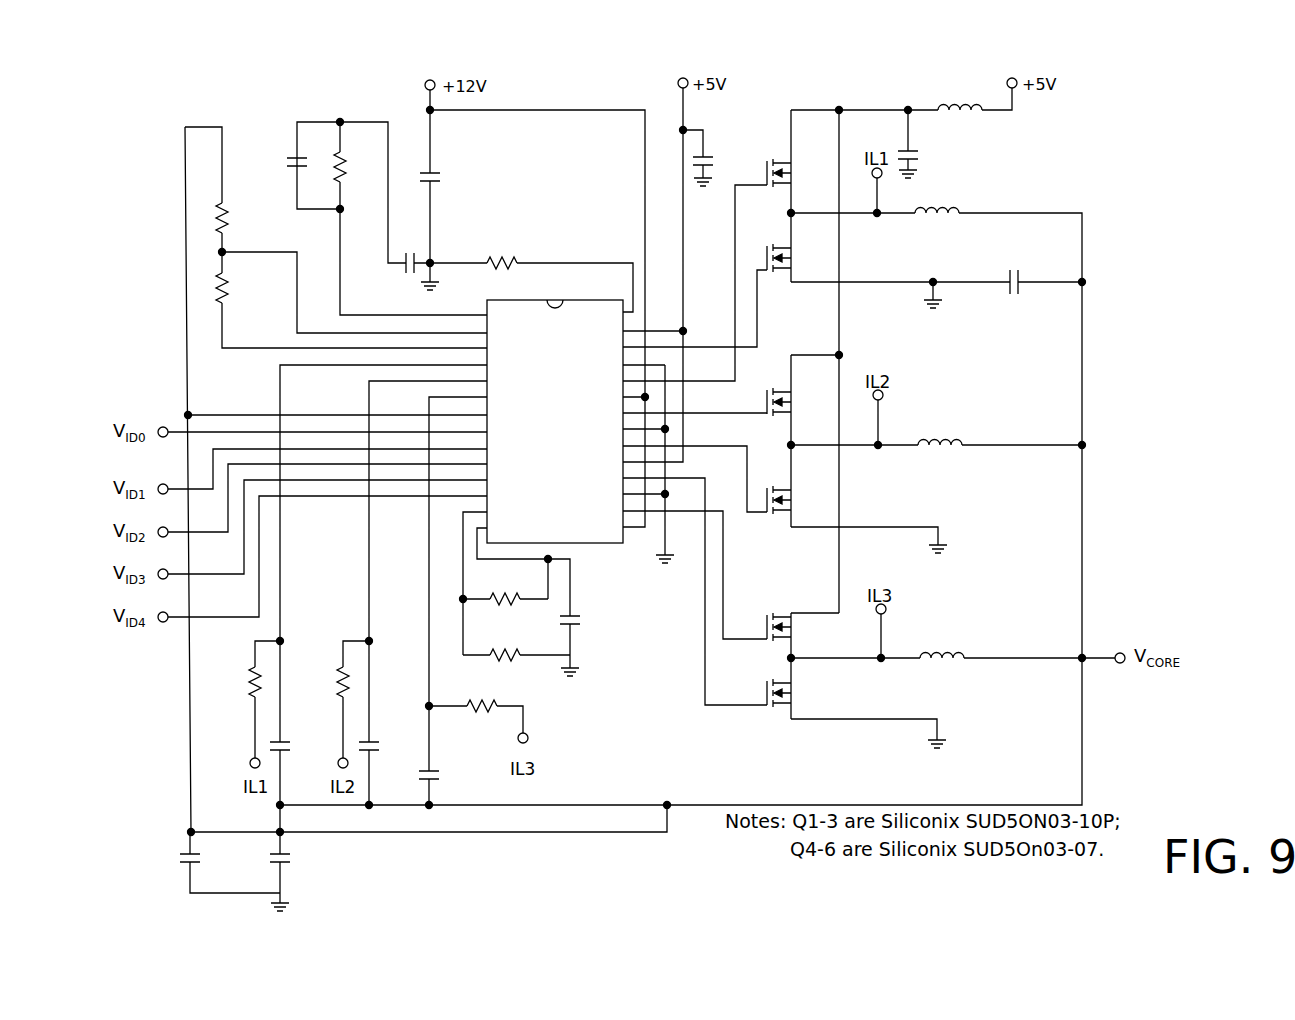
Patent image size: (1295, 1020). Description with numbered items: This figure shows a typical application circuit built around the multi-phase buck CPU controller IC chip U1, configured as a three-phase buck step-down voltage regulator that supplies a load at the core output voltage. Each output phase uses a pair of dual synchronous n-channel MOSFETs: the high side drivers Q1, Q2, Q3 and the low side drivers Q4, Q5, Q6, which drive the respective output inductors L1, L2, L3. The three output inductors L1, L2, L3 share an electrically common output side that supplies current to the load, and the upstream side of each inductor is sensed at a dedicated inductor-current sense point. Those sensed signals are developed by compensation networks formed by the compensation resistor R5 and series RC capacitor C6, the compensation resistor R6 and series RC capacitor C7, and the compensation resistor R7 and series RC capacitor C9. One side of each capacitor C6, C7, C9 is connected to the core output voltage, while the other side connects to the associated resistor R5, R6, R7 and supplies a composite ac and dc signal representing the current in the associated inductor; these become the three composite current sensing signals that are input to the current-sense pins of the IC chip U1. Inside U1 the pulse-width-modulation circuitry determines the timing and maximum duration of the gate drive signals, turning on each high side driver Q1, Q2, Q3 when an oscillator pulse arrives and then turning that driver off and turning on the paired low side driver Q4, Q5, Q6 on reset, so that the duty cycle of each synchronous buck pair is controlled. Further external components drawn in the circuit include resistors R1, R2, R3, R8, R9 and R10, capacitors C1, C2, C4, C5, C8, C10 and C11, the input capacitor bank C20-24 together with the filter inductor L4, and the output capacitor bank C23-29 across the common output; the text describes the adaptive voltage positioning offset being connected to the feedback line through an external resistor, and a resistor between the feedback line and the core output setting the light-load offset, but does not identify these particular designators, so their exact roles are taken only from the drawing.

The IC chip U1 is at (555, 411).
The resistor 3.6k R1 is at (502, 599).
The resistor 825 ohm R2 is at (505, 656).
The oscillator resistor 56.2k R3 is at (505, 266).
The compensation resistor R5 is at (238, 684).
The compensation resistor R6 is at (327, 684).
The compensation resistor R7 is at (474, 706).
The resistor 35.7k R8 is at (245, 295).
The resistor 5.11k R9 is at (245, 225).
The resistor 5.11k R10 is at (356, 180).
The capacitor 1uF C1 is at (445, 182).
The capacitor 1uF C2 is at (719, 161).
The capacitor 1uF C4 is at (408, 265).
The capacitor 0.1uF C5 is at (591, 624).
The series RC capacitor C6 is at (302, 753).
The series RC capacitor C7 is at (391, 753).
The capacitor .01uF C8 is at (302, 864).
The series RC capacitor C9 is at (454, 775).
The capacitor .01uF C10 is at (211, 864).
The capacitor .01uF C11 is at (278, 168).
The input capacitors 5 x 1200uF 10V C20-24 is at (983, 159).
The output capacitors 14 x 1200uF 10V C23-29 is at (1016, 289).
The output inductor L1 is at (940, 217).
The output inductor L2 is at (941, 449).
The output inductor L3 is at (942, 662).
The inductor 300nH L4 is at (965, 112).
The high side driver Q1 is at (793, 161).
The high side driver Q2 is at (793, 400).
The high side driver Q3 is at (793, 635).
The low side driver Q4 is at (793, 247).
The low side driver Q5 is at (793, 486).
The low side driver Q6 is at (793, 688).